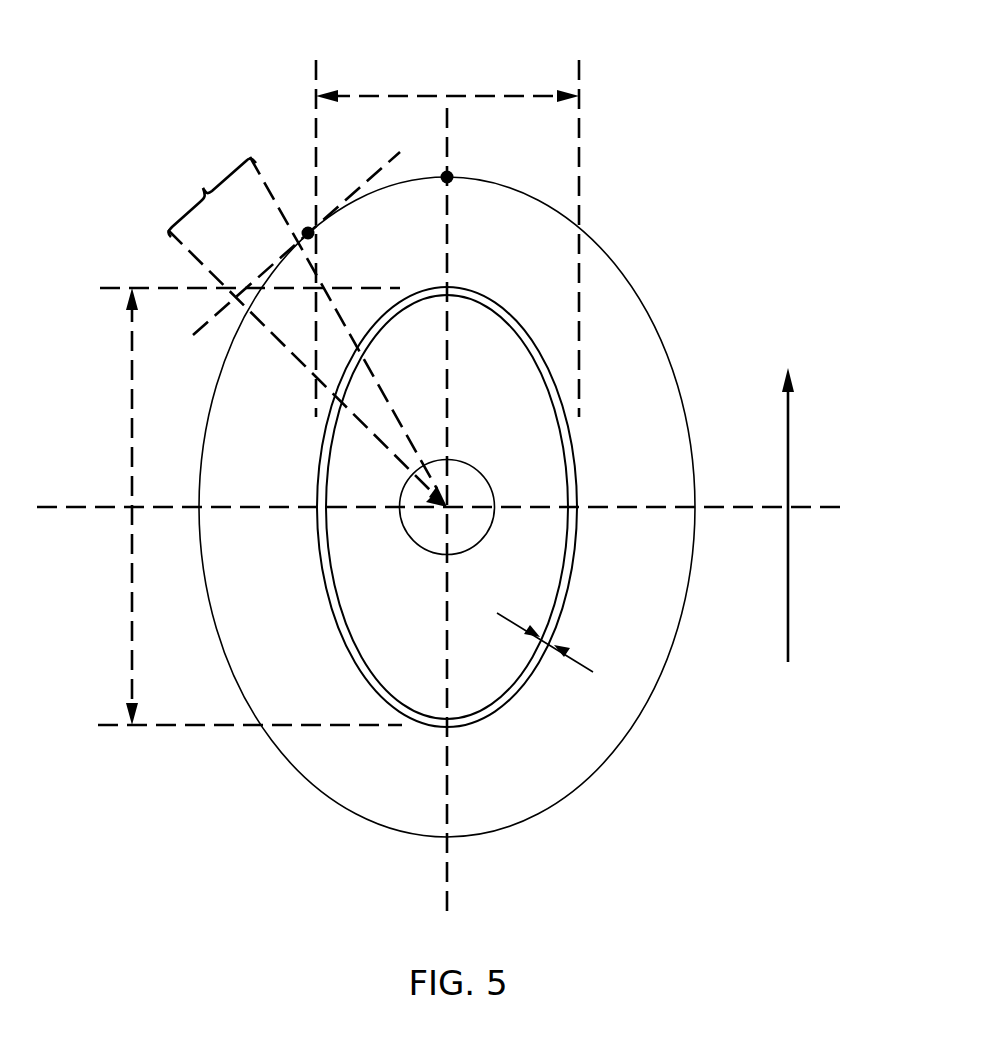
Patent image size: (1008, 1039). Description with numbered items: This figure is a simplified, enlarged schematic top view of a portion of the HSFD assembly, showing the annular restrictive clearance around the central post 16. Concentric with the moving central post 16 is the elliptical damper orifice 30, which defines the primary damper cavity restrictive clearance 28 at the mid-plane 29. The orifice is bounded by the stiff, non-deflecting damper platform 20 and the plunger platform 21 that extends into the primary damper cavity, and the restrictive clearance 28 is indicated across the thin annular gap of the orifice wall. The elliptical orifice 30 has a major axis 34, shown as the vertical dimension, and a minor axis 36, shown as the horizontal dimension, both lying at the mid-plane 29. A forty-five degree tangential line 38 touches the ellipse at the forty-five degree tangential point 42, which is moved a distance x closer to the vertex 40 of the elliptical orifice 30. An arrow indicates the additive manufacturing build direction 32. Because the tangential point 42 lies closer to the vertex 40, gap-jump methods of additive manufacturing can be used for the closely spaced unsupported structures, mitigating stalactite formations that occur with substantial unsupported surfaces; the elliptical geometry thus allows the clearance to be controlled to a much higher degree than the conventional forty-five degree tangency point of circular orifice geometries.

The central post 16 is at (477, 465).
The damper platform 20 is at (382, 632).
The plunger platform 21 is at (340, 768).
The primary damper cavity restrictive clearance 28 is at (580, 662).
The mid-plane 29 is at (640, 298).
The elliptical orifice 30 is at (428, 728).
The build direction 32 is at (788, 475).
The major axis 34 is at (132, 600).
The minor axis 36 is at (492, 94).
The 45-degree tangential line 38 is at (262, 278).
The vertex 40 is at (450, 170).
The 45-degree tangential point 42 is at (307, 228).